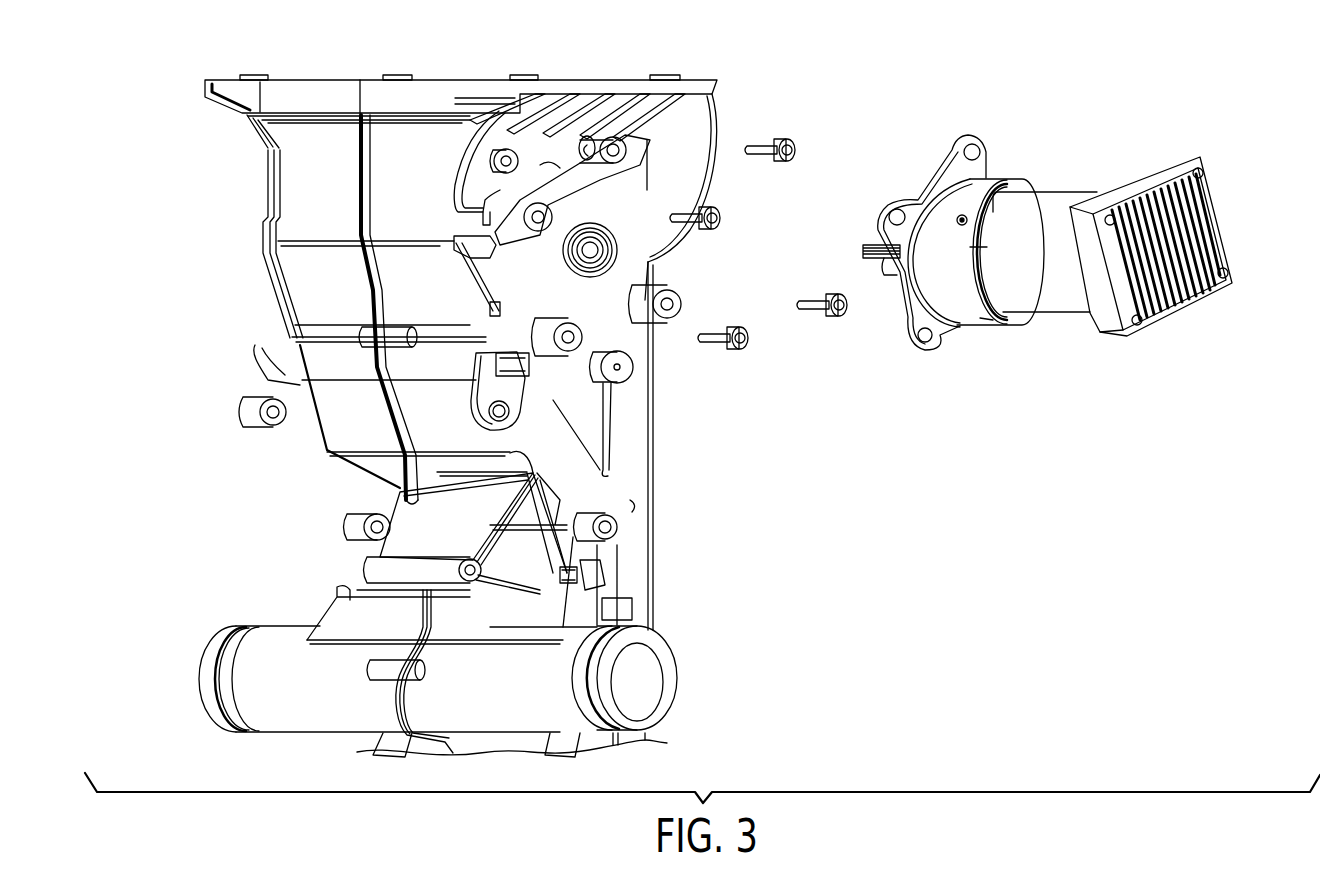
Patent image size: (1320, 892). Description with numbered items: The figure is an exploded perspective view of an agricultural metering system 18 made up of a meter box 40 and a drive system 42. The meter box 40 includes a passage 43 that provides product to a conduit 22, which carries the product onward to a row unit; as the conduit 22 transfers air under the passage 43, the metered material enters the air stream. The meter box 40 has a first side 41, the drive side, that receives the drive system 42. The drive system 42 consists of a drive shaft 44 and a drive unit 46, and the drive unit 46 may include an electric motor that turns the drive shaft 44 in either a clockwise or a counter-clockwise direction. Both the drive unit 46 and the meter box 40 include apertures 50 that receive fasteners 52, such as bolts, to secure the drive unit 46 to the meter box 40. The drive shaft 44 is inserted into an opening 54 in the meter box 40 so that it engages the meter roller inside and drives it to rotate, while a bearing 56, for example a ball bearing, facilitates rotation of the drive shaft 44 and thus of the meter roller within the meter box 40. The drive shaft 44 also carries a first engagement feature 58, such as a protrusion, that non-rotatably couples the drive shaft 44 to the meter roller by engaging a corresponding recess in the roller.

The agricultural metering system 18 is at (912, 112).
The conduit 22 is at (563, 713).
The meter box 40 is at (243, 298).
The first side 41 is at (678, 420).
The drive system 42 is at (876, 375).
The passage 43 is at (630, 500).
The drive shaft 44 is at (862, 250).
The drive unit 46 is at (1022, 345).
The apertures 50 is at (548, 210).
The fasteners 52 is at (688, 212).
The opening 54 is at (600, 248).
The bearing 56 is at (597, 283).
The first engagement feature 58 is at (887, 262).